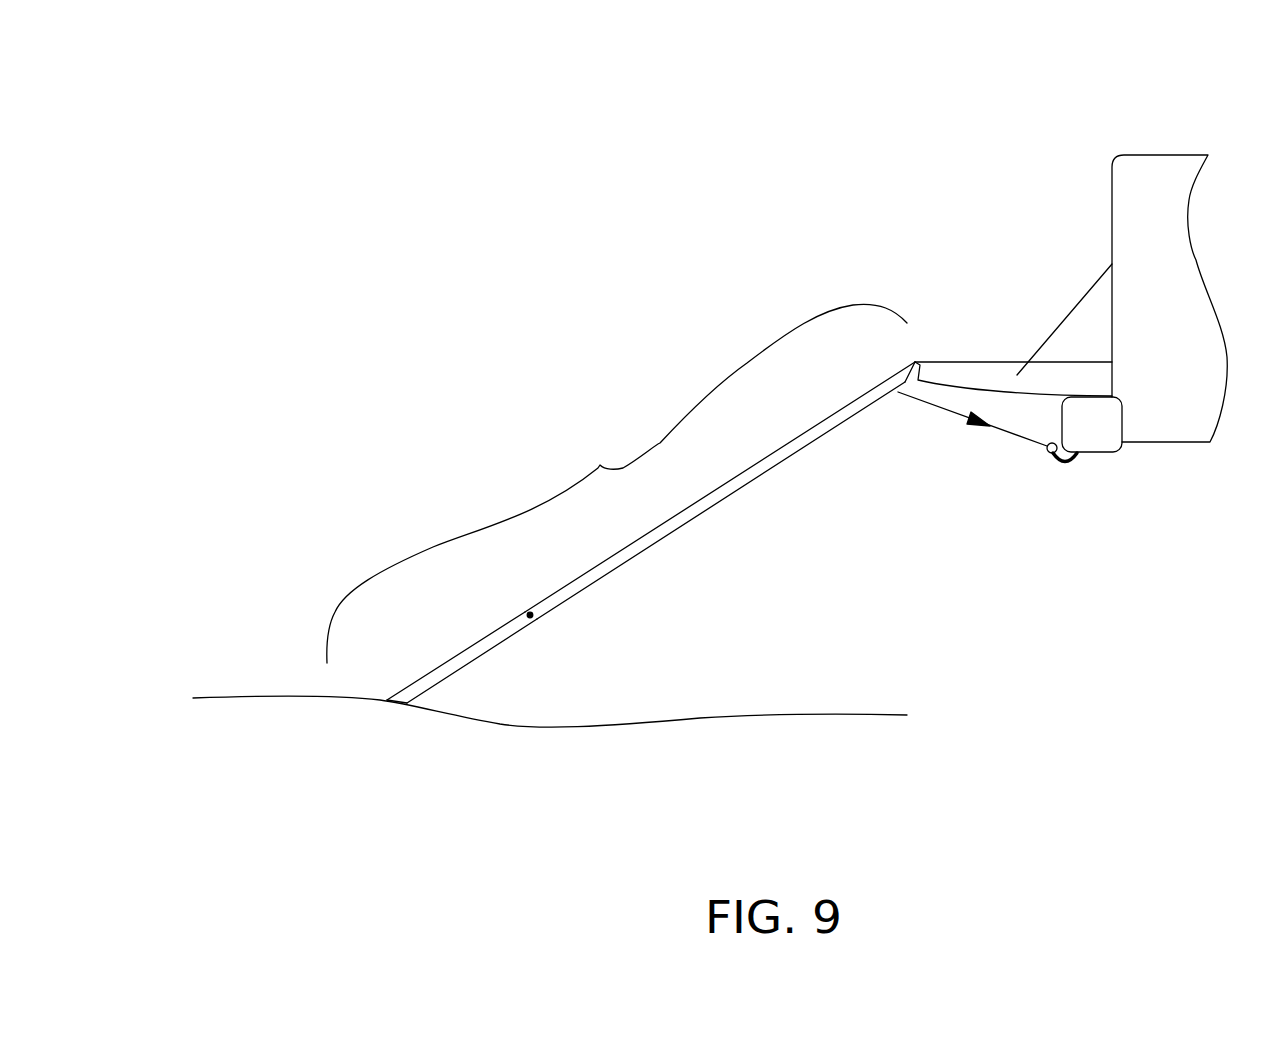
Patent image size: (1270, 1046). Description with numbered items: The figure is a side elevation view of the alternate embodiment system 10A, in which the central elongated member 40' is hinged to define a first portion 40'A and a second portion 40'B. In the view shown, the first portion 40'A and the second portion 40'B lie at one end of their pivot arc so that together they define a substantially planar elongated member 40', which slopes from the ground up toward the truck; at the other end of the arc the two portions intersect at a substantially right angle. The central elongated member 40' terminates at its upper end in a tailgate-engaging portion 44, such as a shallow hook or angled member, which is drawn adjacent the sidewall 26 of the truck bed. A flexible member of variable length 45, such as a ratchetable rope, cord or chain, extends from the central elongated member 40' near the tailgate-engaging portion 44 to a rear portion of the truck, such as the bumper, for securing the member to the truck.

The alternate embodiment system 10A is at (352, 370).
The sidewall 26 is at (1163, 177).
The tailgate-engaging portion 44 is at (940, 362).
The flexible member of variable length 45 is at (1020, 440).
The central elongated member 40' is at (617, 483).
The first portion 40'A is at (496, 665).
The second portion 40'B is at (720, 490).